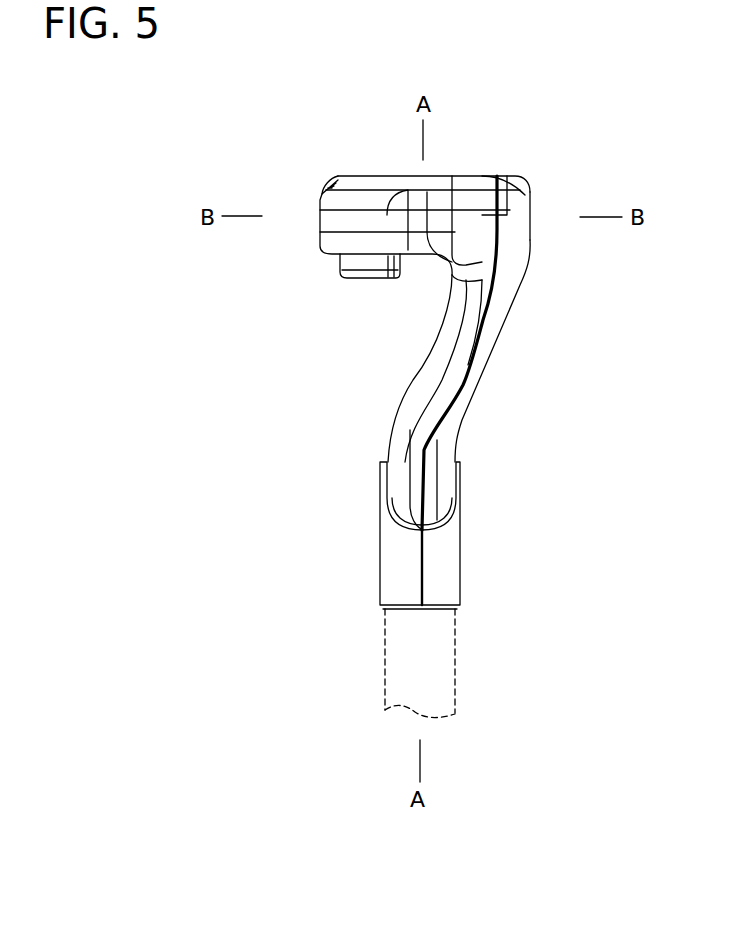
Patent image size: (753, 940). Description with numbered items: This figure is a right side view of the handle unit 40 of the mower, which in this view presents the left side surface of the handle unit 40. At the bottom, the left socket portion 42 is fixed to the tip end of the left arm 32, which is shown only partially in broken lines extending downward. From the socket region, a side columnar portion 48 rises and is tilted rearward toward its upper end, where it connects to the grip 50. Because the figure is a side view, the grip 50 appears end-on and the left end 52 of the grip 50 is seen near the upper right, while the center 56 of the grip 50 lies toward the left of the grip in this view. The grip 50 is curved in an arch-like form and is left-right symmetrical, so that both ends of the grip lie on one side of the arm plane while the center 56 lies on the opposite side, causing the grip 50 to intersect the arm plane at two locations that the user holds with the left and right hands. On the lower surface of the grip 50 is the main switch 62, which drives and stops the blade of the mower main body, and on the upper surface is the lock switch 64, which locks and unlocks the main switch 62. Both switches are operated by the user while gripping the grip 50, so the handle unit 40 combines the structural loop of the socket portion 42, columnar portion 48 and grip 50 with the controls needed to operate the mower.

The handle unit 40 is at (650, 72).
The center of the grip 56 is at (318, 216).
The lock switch 64 is at (326, 188).
The main switch 62 is at (354, 280).
The left end of the grip 52 is at (530, 217).
The grip 50 is at (455, 176).
The side columnar portion 48 is at (500, 334).
The left socket portion 42 is at (463, 543).
The left arm 32 is at (456, 650).